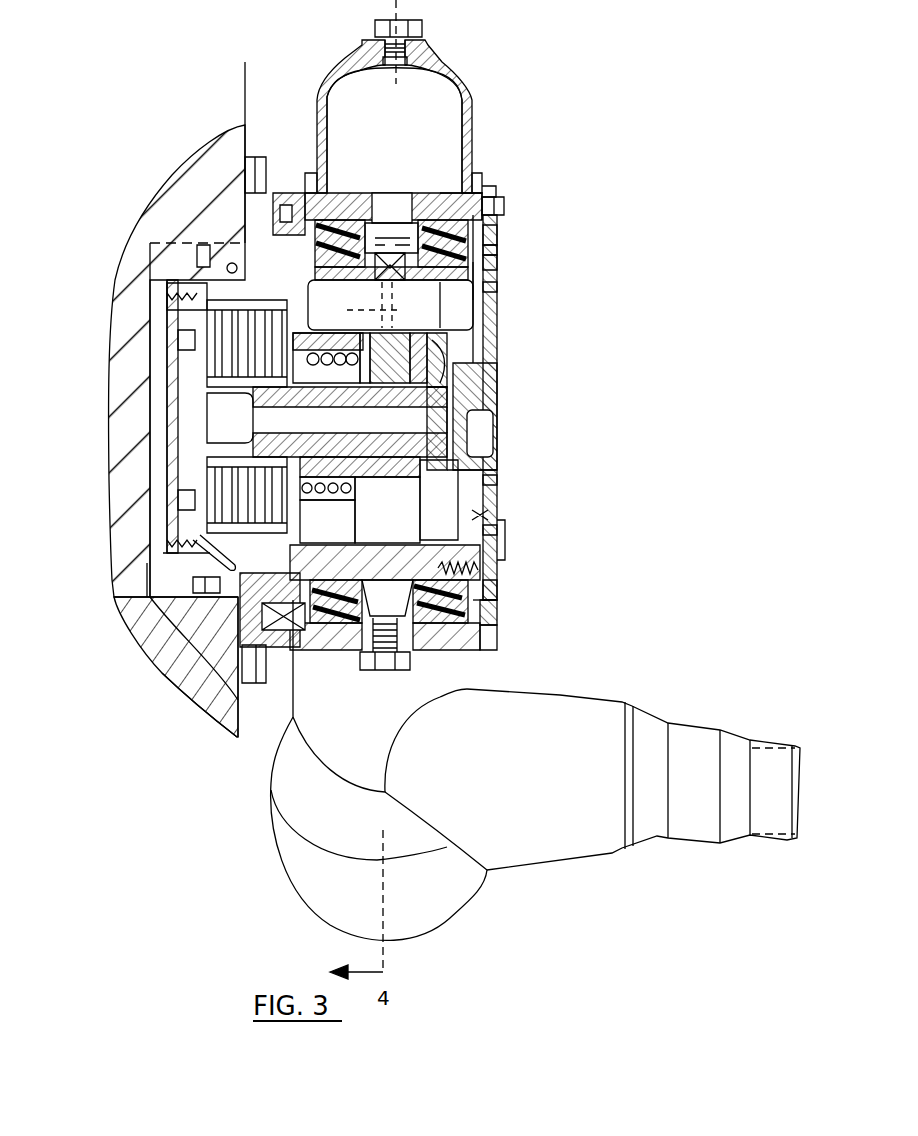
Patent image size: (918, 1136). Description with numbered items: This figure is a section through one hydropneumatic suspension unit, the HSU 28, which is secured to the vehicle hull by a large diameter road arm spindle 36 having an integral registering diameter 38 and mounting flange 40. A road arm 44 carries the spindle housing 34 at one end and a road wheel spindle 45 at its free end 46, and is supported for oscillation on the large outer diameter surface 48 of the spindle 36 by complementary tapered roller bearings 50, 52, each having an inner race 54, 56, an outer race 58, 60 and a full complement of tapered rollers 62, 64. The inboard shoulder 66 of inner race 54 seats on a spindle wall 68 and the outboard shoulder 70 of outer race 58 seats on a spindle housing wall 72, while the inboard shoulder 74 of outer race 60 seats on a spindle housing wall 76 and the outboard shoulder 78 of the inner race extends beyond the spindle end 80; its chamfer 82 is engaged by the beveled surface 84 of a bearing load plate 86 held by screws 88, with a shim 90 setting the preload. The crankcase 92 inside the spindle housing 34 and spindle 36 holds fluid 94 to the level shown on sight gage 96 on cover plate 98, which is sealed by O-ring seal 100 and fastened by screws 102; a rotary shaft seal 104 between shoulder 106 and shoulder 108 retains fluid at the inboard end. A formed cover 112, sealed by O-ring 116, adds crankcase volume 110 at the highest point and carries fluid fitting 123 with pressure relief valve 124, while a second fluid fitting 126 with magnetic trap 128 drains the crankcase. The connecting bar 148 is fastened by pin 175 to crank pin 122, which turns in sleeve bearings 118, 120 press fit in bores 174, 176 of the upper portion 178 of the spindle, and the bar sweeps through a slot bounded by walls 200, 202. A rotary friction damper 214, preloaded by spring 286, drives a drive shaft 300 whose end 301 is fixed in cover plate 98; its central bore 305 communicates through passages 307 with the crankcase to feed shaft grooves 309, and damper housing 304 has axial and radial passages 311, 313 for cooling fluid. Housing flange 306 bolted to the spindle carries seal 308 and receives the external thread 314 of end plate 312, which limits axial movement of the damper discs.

The HSU 28 is at (510, 553).
The spindle housing 34 is at (488, 647).
The road arm spindle 36 is at (190, 622).
The registering diameter 38 is at (150, 600).
The mounting flange 40 is at (247, 157).
The road arm 44 is at (462, 668).
The road wheel spindle 45 is at (566, 708).
The free end 46 is at (438, 897).
The outer diameter surface 48 is at (452, 556).
The inboard tapered roller bearing 50 is at (275, 652).
The outboard tapered roller bearing 52 is at (478, 582).
The inner race 54 is at (347, 523).
The inner race 56 is at (506, 232).
The outer race 58 is at (355, 228).
The outer race 60 is at (495, 182).
The tapered rollers 62 is at (318, 215).
The tapered rollers 64 is at (505, 222).
The inboard shoulder 66 is at (298, 573).
The spindle wall 68 is at (302, 212).
The outboard shoulder 70 is at (380, 248).
The spindle housing wall 72 is at (340, 650).
The inboard shoulder 74 is at (413, 655).
The spindle housing wall 76 is at (462, 193).
The outboard shoulder 78 is at (500, 248).
The spindle end 80 is at (480, 528).
The chamfer 82 is at (498, 265).
The beveled surface 84 is at (482, 600).
The bearing load plate 86 is at (497, 287).
The screws 88 is at (512, 546).
The shim 90 is at (482, 470).
The crankcase 92 is at (452, 512).
The fluid 94 is at (430, 190).
The sight gage 96 is at (476, 272).
The cover plate 98 is at (494, 358).
The O-ring seal 100 is at (500, 618).
The screws 102 is at (490, 623).
The rotary shaft seal 104 is at (238, 727).
The shoulder 106 is at (238, 720).
The shoulder 108 is at (200, 690).
The additional crankcase volume 110 is at (411, 139).
The formed cover 112 is at (440, 72).
The O-ring 116 is at (478, 172).
The sleeve bearing 118 is at (355, 285).
The sleeve bearing 120 is at (417, 283).
The crank pin 122 is at (428, 329).
The fluid fitting 123 is at (420, 30).
The pressure relief valve 124 is at (395, 68).
The second fluid fitting 126 is at (389, 672).
The magnetic trap 128 is at (413, 515).
The connecting bar 148 is at (412, 378).
The bore 174 is at (355, 310).
The pin 175 is at (165, 296).
The bore 176 is at (430, 412).
The upper portion 178 is at (478, 341).
The slot wall 200 is at (367, 412).
The slot wall 202 is at (468, 338).
The rotary friction damper 214 is at (192, 462).
The spring 286 is at (345, 495).
The drive shaft 300 is at (297, 398).
The shaft end 301 is at (477, 388).
The damper housing 304 is at (205, 277).
The central bore 305 is at (440, 423).
The housing flange 306 is at (214, 240).
The passages 307 is at (487, 468).
The seal 308 is at (150, 585).
The shaft grooves 309 is at (218, 430).
The axial passage 311 is at (290, 292).
The end plate 312 is at (192, 537).
The radial passage 313 is at (150, 243).
The external thread 314 is at (190, 558).